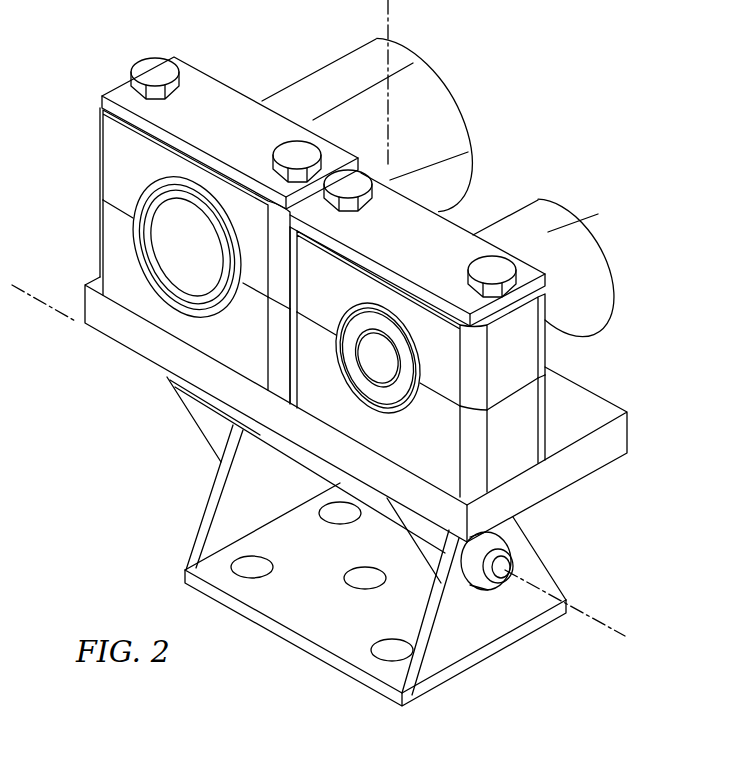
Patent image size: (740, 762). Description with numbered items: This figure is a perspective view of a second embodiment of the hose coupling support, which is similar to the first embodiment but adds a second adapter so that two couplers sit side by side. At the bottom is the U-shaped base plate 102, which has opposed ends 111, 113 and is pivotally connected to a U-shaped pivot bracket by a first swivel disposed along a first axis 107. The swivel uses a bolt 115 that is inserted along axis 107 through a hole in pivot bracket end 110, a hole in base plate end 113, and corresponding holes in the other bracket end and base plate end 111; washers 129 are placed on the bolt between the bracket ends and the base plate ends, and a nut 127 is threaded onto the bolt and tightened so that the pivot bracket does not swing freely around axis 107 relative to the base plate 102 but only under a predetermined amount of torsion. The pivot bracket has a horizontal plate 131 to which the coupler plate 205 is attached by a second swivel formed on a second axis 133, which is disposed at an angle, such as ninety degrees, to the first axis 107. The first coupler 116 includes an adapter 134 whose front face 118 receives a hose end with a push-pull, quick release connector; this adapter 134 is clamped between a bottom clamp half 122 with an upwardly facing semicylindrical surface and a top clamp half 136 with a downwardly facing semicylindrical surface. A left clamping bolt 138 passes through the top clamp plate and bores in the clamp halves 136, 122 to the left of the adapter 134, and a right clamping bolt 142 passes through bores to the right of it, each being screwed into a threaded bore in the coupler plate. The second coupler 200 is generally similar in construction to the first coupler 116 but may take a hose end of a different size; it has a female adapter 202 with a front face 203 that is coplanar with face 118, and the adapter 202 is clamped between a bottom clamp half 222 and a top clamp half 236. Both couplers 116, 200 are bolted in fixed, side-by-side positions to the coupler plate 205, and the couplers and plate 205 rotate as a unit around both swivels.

The base plate 102 is at (300, 625).
The first axis 107 is at (613, 627).
The second opposed end of pivot bracket 110 is at (207, 427).
The opposed end of base plate 111 is at (372, 685).
The opposed end of base plate 113 is at (202, 533).
The bolt 115 is at (300, 473).
The coupler 116 is at (458, 230).
The front face 118 is at (340, 328).
The bottom clamp half 122 is at (528, 417).
The nut 127 is at (493, 587).
The washers 129 is at (500, 536).
The horizontal plate 131 is at (163, 382).
The second axis 133 is at (390, 28).
The adapter 134 is at (382, 368).
The top clamp half 136 is at (528, 354).
The left clamping bolt 138 is at (143, 68).
The right clamping bolt 142 is at (282, 147).
The second coupler 200 is at (213, 92).
The female adapter 202 is at (152, 272).
The front face 203 is at (182, 243).
The coupler plate 205 is at (307, 430).
The bottom clamp half 222 is at (113, 265).
The top clamp half 236 is at (113, 135).